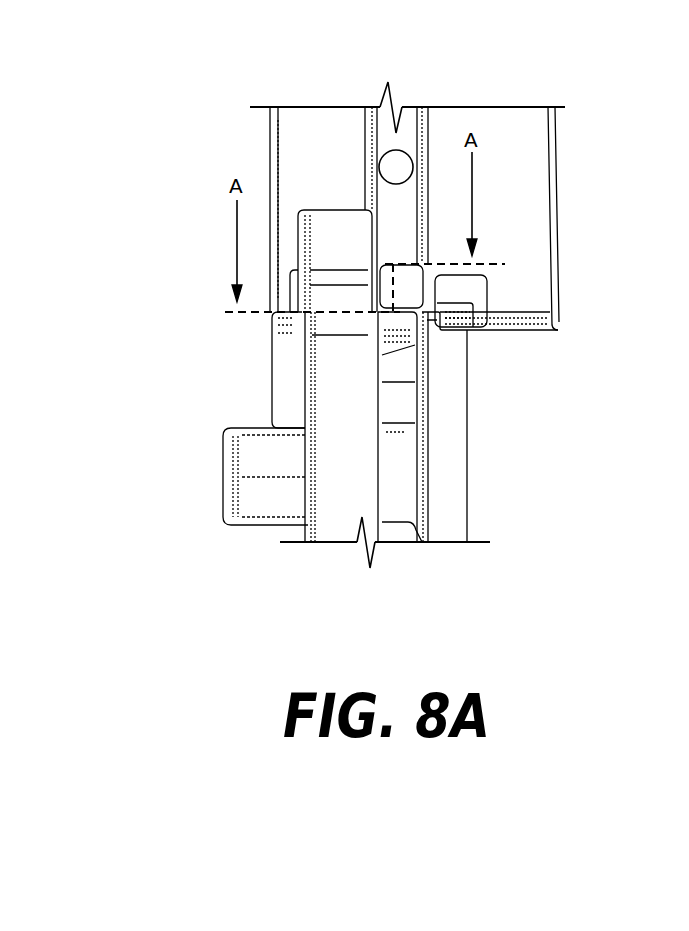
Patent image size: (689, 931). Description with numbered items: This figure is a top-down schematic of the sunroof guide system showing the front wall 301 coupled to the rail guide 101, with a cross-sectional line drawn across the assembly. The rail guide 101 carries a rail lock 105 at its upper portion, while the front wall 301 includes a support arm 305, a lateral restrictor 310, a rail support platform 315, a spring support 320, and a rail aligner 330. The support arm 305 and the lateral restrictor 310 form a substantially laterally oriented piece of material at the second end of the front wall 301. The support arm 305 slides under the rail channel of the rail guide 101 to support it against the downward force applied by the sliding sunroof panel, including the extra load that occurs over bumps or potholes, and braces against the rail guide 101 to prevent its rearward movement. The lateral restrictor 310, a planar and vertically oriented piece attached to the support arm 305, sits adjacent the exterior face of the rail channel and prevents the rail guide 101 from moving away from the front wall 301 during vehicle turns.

The rail guide 101 is at (347, 515).
The rail lock 105 is at (330, 300).
The front wall 301 is at (448, 510).
The support arm 305 is at (397, 410).
The lateral restrictor 310 is at (292, 377).
The rail support platform 315 is at (514, 160).
The spring support 320 is at (223, 488).
The rail aligner 330 is at (467, 290).